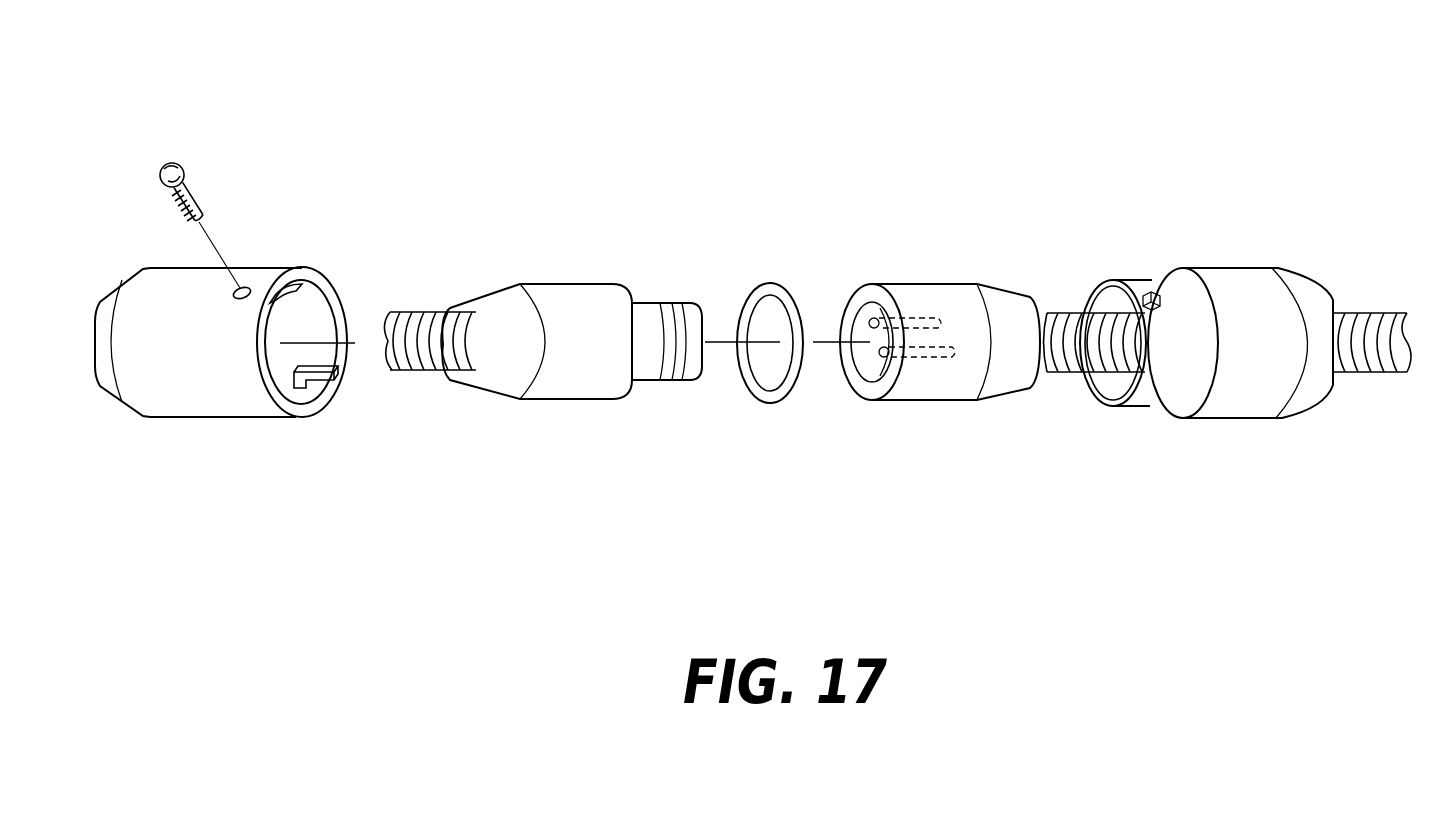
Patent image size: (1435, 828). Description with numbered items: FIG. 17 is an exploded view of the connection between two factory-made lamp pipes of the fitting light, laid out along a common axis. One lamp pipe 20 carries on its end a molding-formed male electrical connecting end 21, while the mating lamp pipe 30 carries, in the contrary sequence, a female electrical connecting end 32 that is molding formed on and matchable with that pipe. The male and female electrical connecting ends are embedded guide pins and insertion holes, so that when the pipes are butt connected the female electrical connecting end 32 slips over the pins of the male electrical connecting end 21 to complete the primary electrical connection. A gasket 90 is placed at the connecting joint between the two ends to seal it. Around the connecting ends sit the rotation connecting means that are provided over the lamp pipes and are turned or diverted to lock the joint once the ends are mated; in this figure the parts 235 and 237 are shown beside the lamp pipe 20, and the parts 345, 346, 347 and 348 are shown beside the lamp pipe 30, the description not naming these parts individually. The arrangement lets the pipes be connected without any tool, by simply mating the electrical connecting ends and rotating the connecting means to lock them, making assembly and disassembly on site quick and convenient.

The lamp pipe 20 is at (1377, 385).
The male electrical connecting end 21 is at (922, 297).
The lamp pipe 30 is at (422, 380).
The female electrical connecting end 32 is at (573, 380).
The gasket 90 is at (785, 400).
The housing 235 is at (1233, 395).
The retaining ring 237 is at (1150, 280).
The cap 345 is at (233, 370).
The key 346 is at (288, 292).
The hole 347 is at (243, 287).
The screw 348 is at (178, 165).